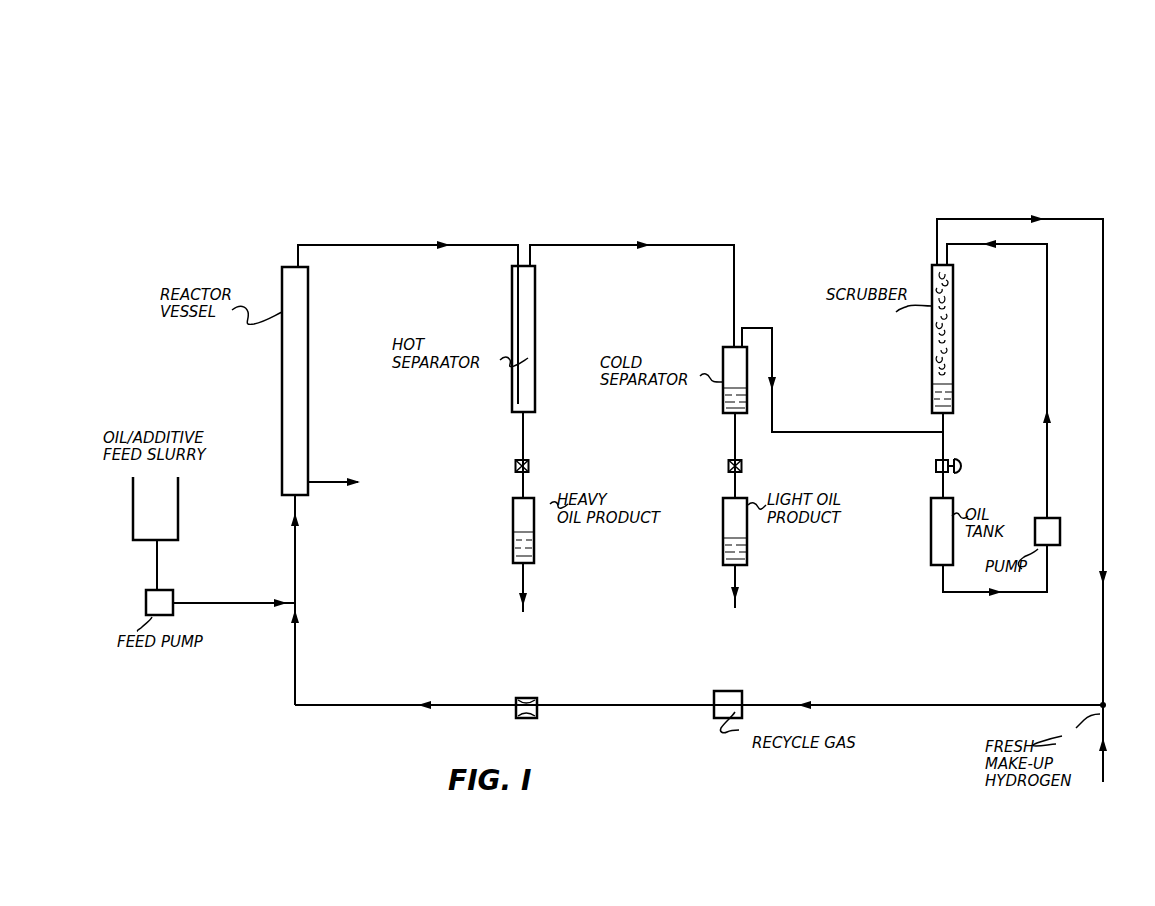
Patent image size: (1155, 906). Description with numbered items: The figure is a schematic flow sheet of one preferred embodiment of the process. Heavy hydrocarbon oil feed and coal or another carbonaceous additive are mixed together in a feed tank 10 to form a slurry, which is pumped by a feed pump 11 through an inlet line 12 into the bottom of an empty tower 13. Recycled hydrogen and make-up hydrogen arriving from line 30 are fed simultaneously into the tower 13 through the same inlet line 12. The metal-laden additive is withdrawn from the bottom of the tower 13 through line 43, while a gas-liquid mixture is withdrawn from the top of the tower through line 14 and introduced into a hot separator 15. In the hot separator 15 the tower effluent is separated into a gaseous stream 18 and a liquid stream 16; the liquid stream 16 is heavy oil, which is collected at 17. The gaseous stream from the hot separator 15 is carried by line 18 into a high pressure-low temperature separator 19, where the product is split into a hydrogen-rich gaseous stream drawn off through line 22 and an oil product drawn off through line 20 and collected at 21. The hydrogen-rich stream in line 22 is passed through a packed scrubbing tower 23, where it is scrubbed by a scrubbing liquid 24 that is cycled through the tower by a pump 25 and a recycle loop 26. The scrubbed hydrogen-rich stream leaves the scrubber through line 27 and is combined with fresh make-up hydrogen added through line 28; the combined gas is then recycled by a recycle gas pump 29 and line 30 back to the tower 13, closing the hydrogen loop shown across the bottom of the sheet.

The feed tank 10 is at (176, 528).
The feed pump 11 is at (166, 598).
The inlet line 12 is at (296, 587).
The tower 13 is at (309, 362).
The line 14 is at (474, 244).
The hot separator 15 is at (532, 356).
The liquid stream 16 is at (524, 438).
The heavy oil collection point 17 is at (532, 528).
The gaseous stream line 18 is at (616, 244).
The high pressure-low temperature separator 19 is at (722, 402).
The line 20 is at (736, 444).
The oil product collection point 21 is at (746, 532).
The line 22 is at (850, 431).
The packed scrubbing tower 23 is at (930, 334).
The scrubbing liquid 24 is at (940, 546).
The pump 25 is at (1056, 530).
The recycle loop 26 is at (1046, 448).
The line 27 is at (1104, 374).
The line 28 is at (1105, 756).
The recycle gas pump 29 is at (730, 700).
The line 30 is at (296, 688).
The line 43 is at (322, 480).